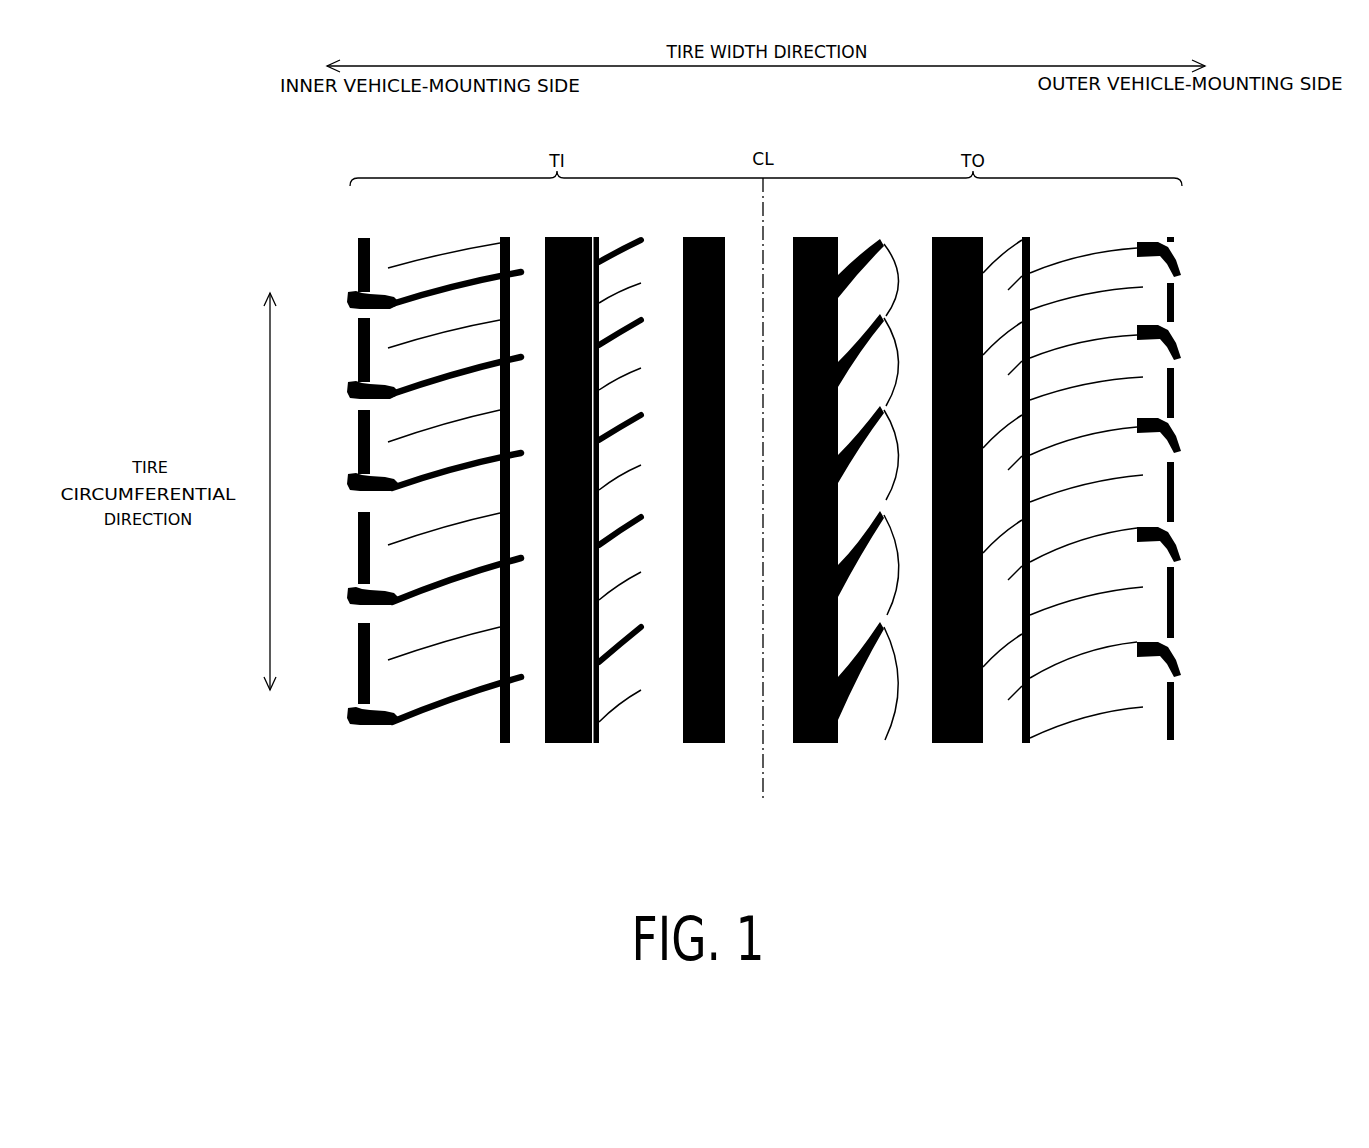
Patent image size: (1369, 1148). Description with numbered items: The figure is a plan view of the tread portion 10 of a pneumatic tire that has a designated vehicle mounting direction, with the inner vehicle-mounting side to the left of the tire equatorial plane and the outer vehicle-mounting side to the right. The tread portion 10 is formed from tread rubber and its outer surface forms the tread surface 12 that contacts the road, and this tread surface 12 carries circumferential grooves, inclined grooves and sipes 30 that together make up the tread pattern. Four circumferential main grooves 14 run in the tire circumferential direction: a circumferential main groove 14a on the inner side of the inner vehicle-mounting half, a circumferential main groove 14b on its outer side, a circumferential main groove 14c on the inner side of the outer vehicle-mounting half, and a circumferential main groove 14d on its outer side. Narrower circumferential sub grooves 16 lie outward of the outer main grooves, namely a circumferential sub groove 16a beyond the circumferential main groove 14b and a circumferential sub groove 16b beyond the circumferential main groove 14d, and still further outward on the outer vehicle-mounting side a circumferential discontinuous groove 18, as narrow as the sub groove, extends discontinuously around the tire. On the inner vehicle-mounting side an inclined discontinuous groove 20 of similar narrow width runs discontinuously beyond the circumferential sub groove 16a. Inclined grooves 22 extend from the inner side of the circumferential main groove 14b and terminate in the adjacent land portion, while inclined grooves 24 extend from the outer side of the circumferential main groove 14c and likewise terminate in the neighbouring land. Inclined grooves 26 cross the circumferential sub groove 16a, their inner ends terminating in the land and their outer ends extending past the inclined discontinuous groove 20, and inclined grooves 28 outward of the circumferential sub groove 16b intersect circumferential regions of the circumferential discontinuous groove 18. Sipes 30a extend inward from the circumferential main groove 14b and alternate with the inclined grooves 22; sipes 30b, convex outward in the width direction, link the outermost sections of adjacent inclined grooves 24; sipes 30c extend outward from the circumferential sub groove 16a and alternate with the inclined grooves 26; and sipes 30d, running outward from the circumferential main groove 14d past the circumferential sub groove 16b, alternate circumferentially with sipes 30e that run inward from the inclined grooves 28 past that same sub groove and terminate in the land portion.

The tread portion 10 is at (523, 252).
The tread surface 12 is at (744, 457).
The circumferential main grooves 14 is at (545, 792).
The circumferential main groove 14a is at (705, 744).
The circumferential main groove 14b is at (572, 744).
The circumferential main groove 14c is at (817, 744).
The circumferential main groove 14d is at (958, 744).
The circumferential sub grooves 16 is at (764, 528).
The circumferential sub groove 16a is at (503, 744).
The circumferential sub groove 16b is at (1025, 744).
The circumferential discontinuous groove 18 is at (1171, 744).
The inclined discontinuous groove 20 is at (360, 683).
The inclined grooves 22 is at (632, 642).
The inclined grooves 24 is at (862, 672).
The inclined grooves 26 is at (430, 717).
The inclined grooves 28 is at (1153, 657).
The sipes 30 is at (1112, 118).
The sipes 30a is at (628, 290).
The sipes 30b is at (896, 250).
The sipes 30c is at (437, 252).
The sipes 30d is at (1077, 293).
The sipes 30e is at (1113, 333).